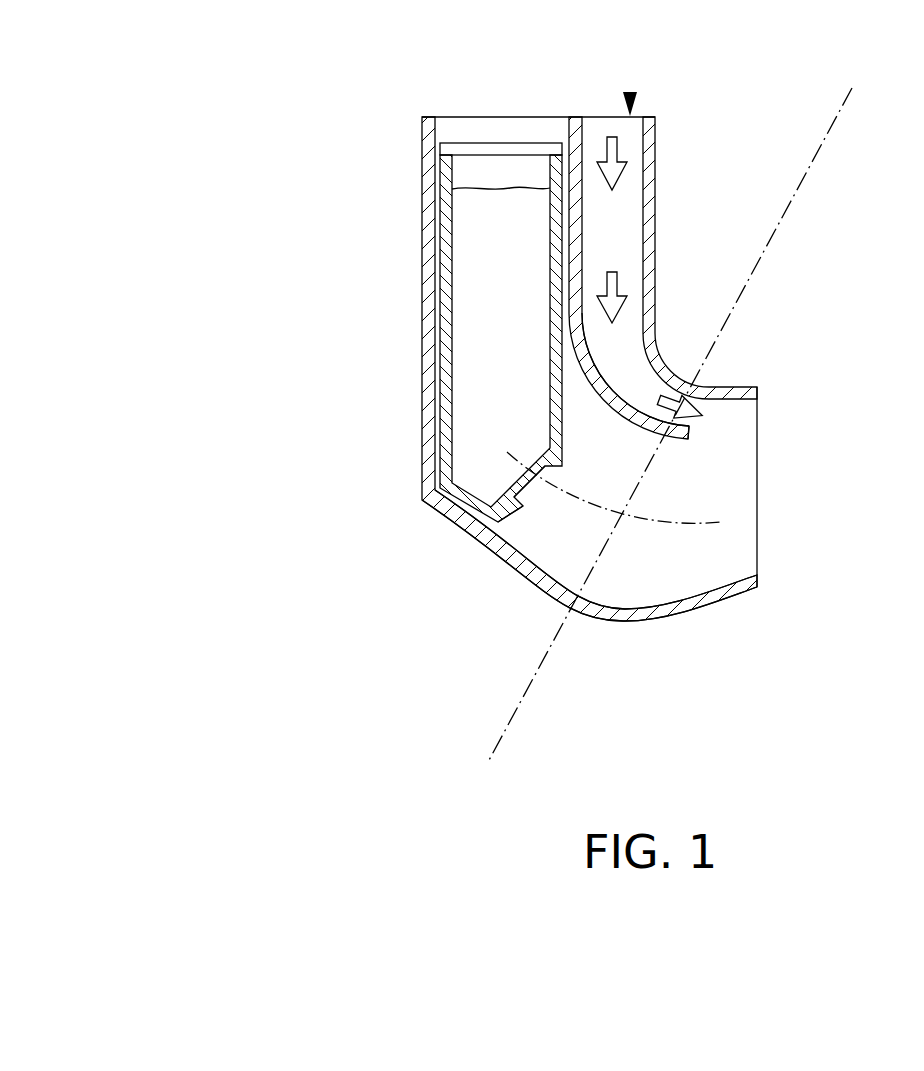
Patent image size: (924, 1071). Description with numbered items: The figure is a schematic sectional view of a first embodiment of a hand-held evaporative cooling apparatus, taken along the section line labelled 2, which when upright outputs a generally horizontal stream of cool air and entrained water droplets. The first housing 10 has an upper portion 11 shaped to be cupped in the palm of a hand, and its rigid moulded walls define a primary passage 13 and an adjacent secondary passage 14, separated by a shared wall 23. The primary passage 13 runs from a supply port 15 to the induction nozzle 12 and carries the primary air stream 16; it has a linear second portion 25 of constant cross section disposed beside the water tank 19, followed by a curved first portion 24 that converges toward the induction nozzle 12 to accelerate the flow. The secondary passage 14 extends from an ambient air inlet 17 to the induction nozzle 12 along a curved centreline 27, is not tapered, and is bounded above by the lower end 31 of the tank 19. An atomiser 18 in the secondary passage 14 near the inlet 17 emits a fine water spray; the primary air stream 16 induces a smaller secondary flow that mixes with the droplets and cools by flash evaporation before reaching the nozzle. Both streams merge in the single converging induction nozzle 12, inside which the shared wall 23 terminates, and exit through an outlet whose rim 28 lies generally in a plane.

The first housing 10 is at (253, 210).
The upper portion 11 is at (427, 162).
The induction nozzle 12 is at (808, 392).
The primary passage 13 is at (617, 228).
The secondary passage 14 is at (543, 533).
The supply port 15 is at (630, 92).
The primary air stream 16 is at (613, 163).
The ambient air inlet 17 is at (516, 600).
The atomiser 18 is at (537, 470).
The water tank 19 is at (470, 247).
The shared wall 23 is at (633, 440).
The first portion 24 is at (650, 405).
The second portion 25 is at (628, 280).
The curved centreline 27 is at (705, 515).
The rim 28 is at (785, 579).
The lower end 31 is at (546, 522).
The section line 2- 2 is at (815, 121).